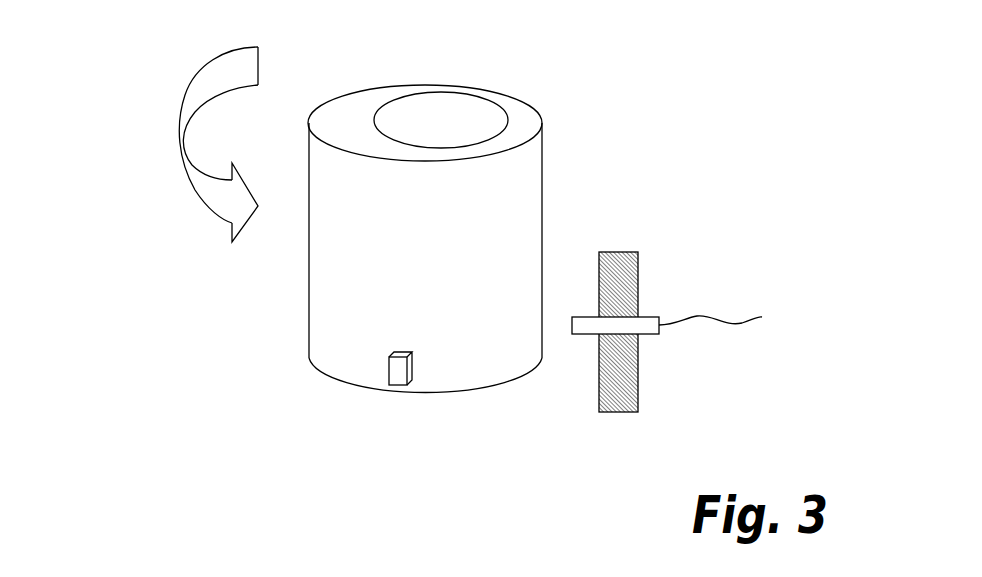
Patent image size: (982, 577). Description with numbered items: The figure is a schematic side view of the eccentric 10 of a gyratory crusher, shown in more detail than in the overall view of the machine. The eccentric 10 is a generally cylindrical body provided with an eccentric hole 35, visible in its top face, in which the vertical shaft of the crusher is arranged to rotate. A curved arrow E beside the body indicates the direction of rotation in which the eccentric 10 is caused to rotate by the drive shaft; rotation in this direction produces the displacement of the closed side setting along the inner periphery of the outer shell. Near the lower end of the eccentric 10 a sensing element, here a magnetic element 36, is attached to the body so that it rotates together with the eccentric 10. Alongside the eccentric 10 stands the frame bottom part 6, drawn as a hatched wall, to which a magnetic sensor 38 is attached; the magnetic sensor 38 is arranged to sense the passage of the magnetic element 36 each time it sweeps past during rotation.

The eccentric 10 is at (527, 180).
The eccentric hole 35 is at (497, 120).
The magnetic element 36 is at (397, 377).
The frame bottom part 6 is at (625, 378).
The magnetic sensor 38 is at (590, 327).
The arrow indicating direction of rotation E is at (200, 184).